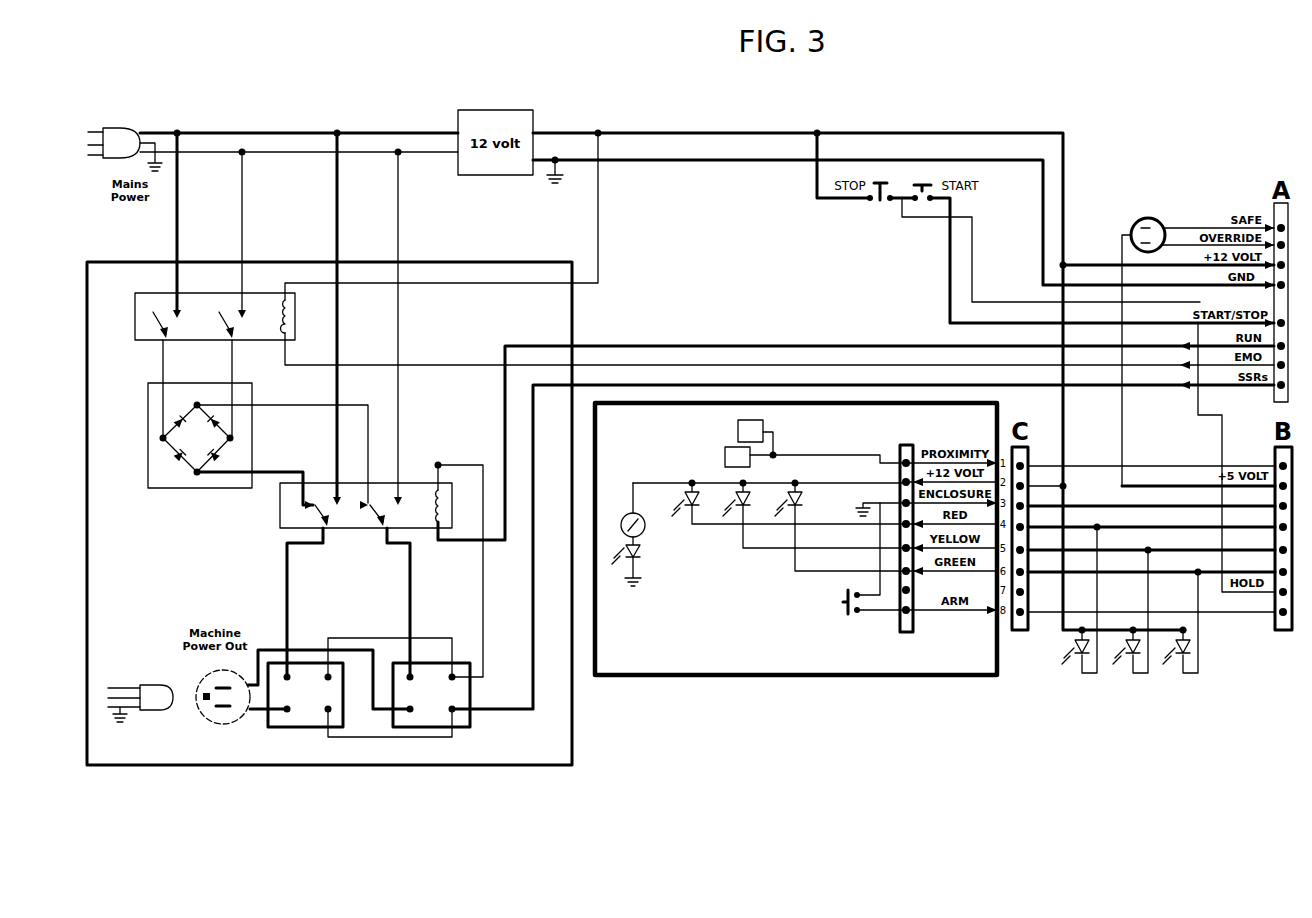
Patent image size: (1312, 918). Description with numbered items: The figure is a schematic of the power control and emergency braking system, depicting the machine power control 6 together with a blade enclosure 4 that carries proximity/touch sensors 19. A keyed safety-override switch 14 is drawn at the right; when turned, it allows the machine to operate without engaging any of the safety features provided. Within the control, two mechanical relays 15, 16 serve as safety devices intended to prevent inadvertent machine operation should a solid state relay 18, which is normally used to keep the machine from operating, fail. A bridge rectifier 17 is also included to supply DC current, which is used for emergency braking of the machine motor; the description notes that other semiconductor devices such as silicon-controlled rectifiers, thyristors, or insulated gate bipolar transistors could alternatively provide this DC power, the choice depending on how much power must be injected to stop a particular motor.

The blade enclosure 4 is at (808, 403).
The machine power control 6 is at (246, 290).
The keyed safety-override switch 14 is at (1148, 218).
The mechanical relay 15 is at (452, 528).
The mechanical relay 16 is at (172, 316).
The bridge rectifier 17 is at (148, 382).
The solid state relay 18 is at (305, 727).
The proximity/touch sensor 19 is at (742, 420).